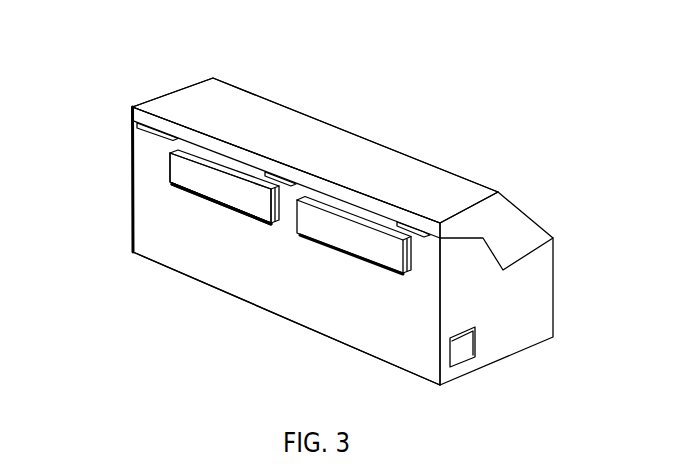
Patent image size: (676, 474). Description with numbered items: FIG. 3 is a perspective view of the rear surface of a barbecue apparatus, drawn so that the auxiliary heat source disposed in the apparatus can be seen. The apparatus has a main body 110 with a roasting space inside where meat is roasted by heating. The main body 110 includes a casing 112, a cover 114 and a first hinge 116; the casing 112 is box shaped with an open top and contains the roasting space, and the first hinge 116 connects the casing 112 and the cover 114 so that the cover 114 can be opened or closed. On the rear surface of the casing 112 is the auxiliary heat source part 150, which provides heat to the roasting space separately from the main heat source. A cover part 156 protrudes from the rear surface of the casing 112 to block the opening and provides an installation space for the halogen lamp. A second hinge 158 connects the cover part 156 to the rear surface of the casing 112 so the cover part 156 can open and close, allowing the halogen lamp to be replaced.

The main body 110 is at (317, 98).
The casing 112 is at (145, 162).
The cover 114 is at (183, 102).
The first hinge 116 is at (158, 113).
The auxiliary heat source part 150 is at (204, 222).
The cover part 156 is at (183, 174).
The second hinge 158 is at (193, 193).